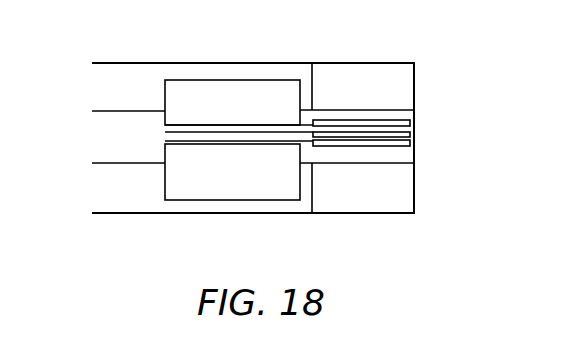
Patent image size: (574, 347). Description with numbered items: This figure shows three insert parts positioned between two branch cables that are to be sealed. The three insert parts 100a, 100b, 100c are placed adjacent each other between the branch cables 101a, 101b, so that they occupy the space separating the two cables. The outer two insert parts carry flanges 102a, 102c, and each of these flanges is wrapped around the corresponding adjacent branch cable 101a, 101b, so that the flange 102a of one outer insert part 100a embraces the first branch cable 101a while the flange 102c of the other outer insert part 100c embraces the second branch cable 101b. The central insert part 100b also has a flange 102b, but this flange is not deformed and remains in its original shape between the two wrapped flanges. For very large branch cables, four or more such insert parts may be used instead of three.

The insert part 100a is at (410, 123).
The insert part 100b is at (410, 134).
The insert part 100c is at (410, 146).
The branch cable 101a is at (131, 72).
The branch cable 101b is at (132, 200).
The flange 102a is at (232, 92).
The flange 102b is at (165, 131).
The flange 102c is at (232, 190).